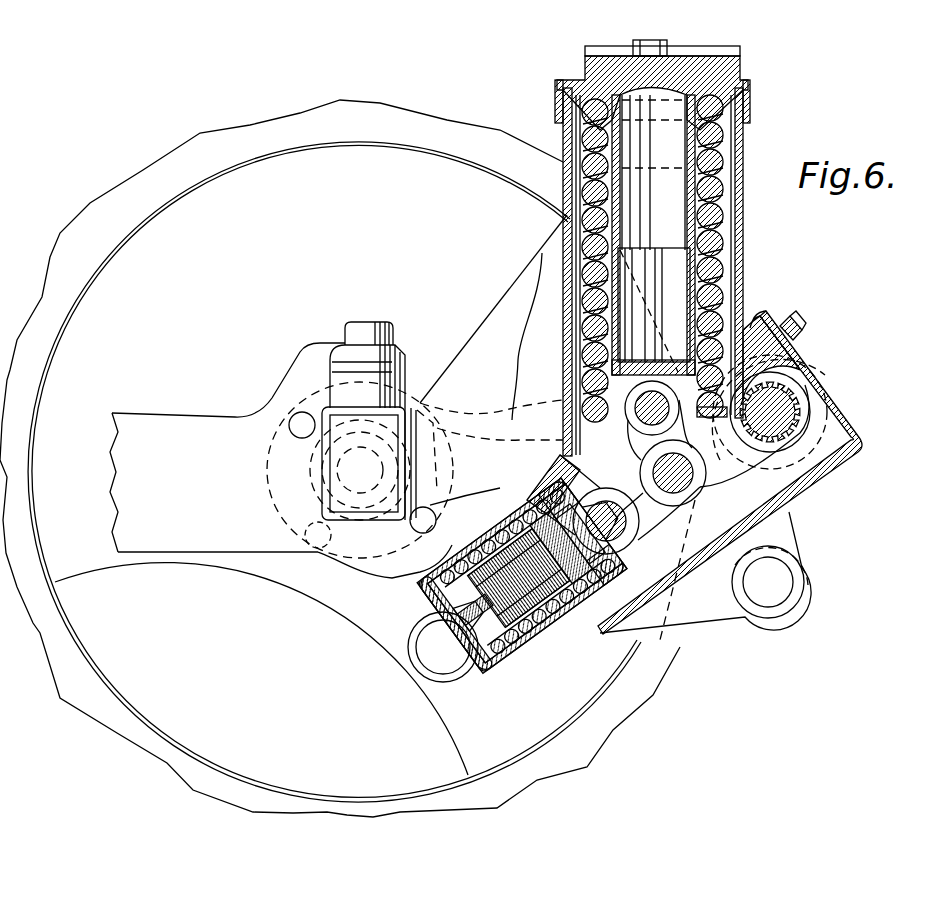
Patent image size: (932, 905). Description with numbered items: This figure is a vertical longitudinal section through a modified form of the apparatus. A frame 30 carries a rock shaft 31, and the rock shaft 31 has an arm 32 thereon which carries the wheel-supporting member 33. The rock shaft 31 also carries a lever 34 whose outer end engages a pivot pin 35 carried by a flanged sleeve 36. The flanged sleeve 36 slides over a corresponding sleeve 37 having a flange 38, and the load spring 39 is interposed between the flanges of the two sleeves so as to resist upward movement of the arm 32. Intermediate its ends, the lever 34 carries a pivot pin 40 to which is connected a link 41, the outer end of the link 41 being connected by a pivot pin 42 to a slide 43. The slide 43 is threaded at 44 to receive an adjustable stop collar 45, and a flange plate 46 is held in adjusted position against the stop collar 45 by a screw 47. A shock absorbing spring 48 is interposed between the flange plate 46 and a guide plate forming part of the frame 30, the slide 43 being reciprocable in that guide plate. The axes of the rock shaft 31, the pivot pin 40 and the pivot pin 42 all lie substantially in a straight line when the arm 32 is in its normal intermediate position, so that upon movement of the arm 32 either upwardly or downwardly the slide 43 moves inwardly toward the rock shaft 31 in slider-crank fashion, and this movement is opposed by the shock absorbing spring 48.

The frame 30 is at (560, 140).
The rock shaft 31 is at (790, 405).
The arm 32 is at (505, 408).
The wheel-supporting member 33 is at (368, 335).
The lever 34 is at (762, 474).
The pivot pin 35 is at (640, 420).
The flanged sleeve 36 is at (578, 412).
The sleeve 37 is at (705, 160).
The flange 38 is at (702, 80).
The load spring 39 is at (700, 262).
The pivot pin 40 is at (690, 492).
The link 41 is at (626, 532).
The pivot pin 42 is at (598, 590).
The slide 43 is at (563, 612).
The threaded portion 44 is at (525, 630).
The adjustable stop collar 45 is at (472, 650).
The flange plate 46 is at (432, 672).
The screw 47 is at (440, 630).
The shock absorbing spring 48 is at (503, 535).